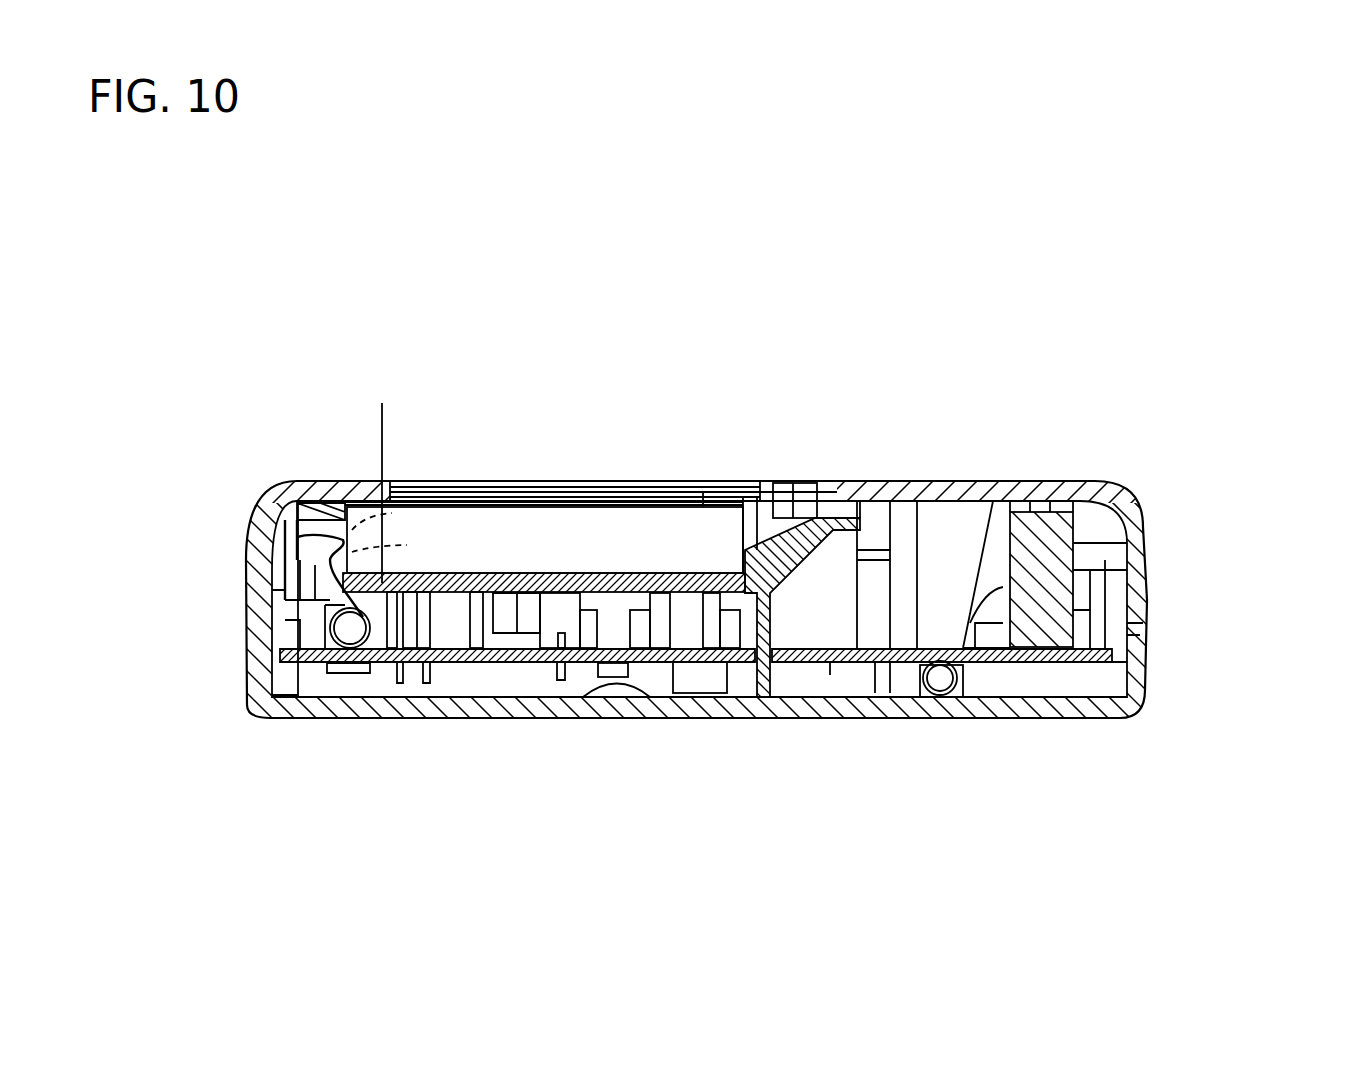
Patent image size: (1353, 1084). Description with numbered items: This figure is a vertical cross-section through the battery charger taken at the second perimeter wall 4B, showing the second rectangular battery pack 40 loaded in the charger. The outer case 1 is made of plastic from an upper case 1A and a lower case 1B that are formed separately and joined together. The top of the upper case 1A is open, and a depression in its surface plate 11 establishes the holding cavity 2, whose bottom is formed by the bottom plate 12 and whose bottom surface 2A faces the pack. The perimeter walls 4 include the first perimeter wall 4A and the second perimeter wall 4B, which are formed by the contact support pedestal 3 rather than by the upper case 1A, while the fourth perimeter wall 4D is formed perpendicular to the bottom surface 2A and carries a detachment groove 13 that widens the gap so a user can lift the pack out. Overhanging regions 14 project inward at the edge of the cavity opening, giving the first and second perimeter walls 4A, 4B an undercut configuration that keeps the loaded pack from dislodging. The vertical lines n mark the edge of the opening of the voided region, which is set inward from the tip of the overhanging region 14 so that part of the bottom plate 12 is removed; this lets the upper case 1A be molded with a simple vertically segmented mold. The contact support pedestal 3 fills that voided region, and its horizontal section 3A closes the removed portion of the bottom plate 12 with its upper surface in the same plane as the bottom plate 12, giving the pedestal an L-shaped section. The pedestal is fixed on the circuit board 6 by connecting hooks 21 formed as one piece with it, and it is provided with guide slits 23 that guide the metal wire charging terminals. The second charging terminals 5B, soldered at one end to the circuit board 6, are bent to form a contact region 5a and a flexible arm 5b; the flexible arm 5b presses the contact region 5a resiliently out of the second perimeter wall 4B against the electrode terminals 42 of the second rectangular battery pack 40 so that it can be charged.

The outer case 1 is at (1276, 455).
The upper case 1A is at (1143, 493).
The lower case 1B is at (1143, 688).
The holding cavity 2 is at (625, 483).
The bottom surface 2A is at (503, 570).
The contact support pedestal 3 is at (300, 600).
The horizontal section 3A is at (415, 640).
The perimeter walls 4 is at (828, 338).
The first perimeter wall 4A is at (437, 483).
The second perimeter wall 4B is at (353, 480).
The fourth perimeter wall 4D is at (743, 483).
The second charging terminals 5B is at (300, 545).
The contact region 5a is at (355, 545).
The flexible arm 5b is at (290, 572).
The circuit board 6 is at (513, 662).
The surface plate 11 is at (940, 483).
The bottom plate 12 is at (650, 573).
The detachment grooves 13 is at (800, 496).
The overhanging regions 14 is at (367, 483).
The connecting hooks 21 is at (613, 677).
The guide slits 23 is at (292, 522).
The second rectangular battery pack 40 is at (548, 483).
The electrode terminals 42 is at (407, 477).
The vertical lines n is at (383, 430).